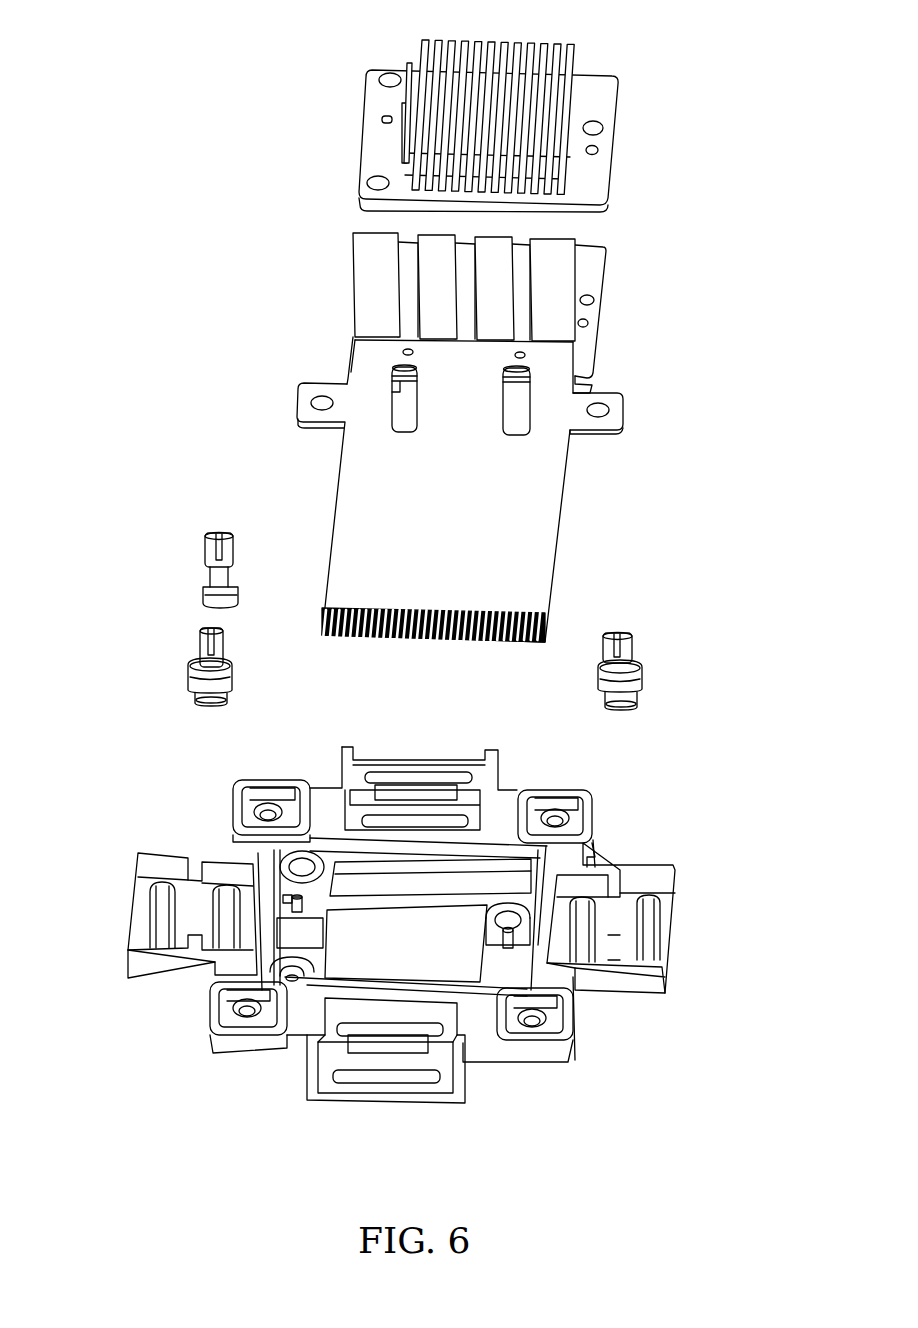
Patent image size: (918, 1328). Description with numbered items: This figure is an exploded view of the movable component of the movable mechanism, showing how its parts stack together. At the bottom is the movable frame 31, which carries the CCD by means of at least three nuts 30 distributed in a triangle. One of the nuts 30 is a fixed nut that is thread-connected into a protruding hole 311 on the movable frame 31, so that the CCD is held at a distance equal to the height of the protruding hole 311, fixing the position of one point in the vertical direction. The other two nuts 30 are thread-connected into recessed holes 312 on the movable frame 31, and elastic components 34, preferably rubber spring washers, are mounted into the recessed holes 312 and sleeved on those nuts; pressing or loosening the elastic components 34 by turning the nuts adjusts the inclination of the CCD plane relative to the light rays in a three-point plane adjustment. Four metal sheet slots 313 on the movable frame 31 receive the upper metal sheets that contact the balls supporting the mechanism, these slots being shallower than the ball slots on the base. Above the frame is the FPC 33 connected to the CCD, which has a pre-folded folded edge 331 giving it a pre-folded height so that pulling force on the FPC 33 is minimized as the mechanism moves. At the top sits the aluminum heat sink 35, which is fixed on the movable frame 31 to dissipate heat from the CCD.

The nut 30 is at (195, 640).
The movable frame 31 is at (610, 925).
The FPC 33 is at (372, 380).
The elastic component 34 is at (197, 680).
The heat sink 35 is at (405, 97).
The protruding hole 311 is at (282, 868).
The recessed hole 312 is at (292, 975).
The metal sheet slot 313 is at (258, 800).
The folded edge 331 is at (372, 275).